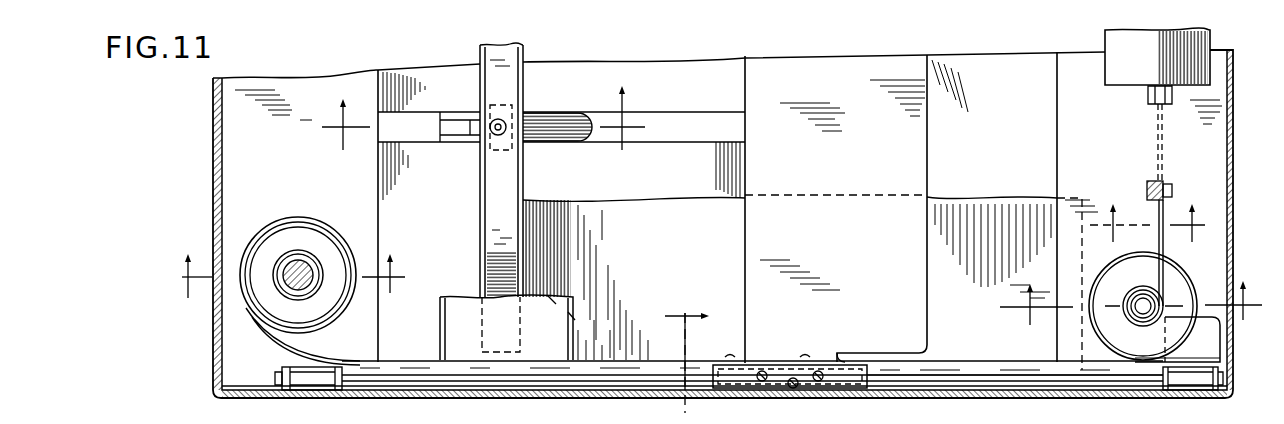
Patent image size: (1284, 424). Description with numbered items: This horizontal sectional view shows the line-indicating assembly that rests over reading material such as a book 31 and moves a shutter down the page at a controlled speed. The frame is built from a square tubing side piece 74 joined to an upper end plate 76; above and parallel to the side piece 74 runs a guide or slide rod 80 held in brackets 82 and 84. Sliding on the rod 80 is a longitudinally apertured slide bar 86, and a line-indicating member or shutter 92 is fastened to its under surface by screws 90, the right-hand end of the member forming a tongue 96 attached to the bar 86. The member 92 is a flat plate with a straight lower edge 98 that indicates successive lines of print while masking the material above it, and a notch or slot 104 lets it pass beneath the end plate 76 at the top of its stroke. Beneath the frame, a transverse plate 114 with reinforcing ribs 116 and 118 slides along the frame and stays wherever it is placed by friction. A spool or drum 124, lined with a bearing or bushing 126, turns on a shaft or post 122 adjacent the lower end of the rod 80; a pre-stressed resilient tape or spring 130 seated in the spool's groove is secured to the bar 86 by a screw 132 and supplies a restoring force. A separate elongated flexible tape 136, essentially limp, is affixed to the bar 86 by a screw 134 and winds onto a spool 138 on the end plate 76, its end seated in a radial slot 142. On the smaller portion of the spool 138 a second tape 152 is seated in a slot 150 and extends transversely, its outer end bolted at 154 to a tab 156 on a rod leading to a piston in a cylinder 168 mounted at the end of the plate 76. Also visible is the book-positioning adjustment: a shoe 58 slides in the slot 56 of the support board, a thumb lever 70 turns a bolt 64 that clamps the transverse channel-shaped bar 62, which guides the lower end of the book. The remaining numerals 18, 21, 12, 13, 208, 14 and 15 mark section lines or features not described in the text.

The housing side wall 18 is at (248, 147).
The section line 21 is at (483, 130).
The shaft or post 122 is at (296, 255).
The bearing or bushing 126 is at (310, 256).
The spool or drum 124 is at (252, 240).
The section line 12 is at (287, 278).
The bracket 84 is at (297, 366).
The reinforcing flange or rib 116 is at (440, 308).
The pre-stressed resilient tape or spring 130 is at (420, 341).
The thumb lever 70 is at (460, 142).
The shoe 58 is at (566, 103).
The bolt 64 is at (506, 135).
The slot 56 is at (680, 113).
The transverse channel-shaped bar 62 is at (480, 215).
The transverse plate 114 is at (552, 300).
The reinforcing flange or rib 118 is at (570, 316).
The section line 13 is at (685, 350).
The screw 132 is at (735, 345).
The guide rail 208 is at (535, 398).
The side piece 74 is at (618, 398).
The slide bar 86 is at (772, 382).
The screws 90 is at (808, 390).
The screw 134 is at (806, 360).
The tongue 96 is at (822, 360).
The notch or slot 104 is at (845, 362).
The guide or slide rod 80 is at (925, 373).
The line-indicating member or shutter 92 is at (850, 91).
The straight lower edge 98 is at (740, 232).
The book 31 is at (965, 202).
The section line 14 is at (1133, 308).
The elongated flexible tape 136 is at (1036, 345).
The cylinder 168 is at (1115, 33).
The upper end plate 76 is at (1108, 121).
The bolt 154 is at (1150, 186).
The tab 156 is at (1165, 183).
The tape 152 is at (1174, 192).
The section line 15 is at (1154, 225).
The spool 138 is at (1175, 275).
The slot 150 is at (1138, 300).
The radial slot 142 is at (1168, 340).
The bracket 82 is at (1170, 392).